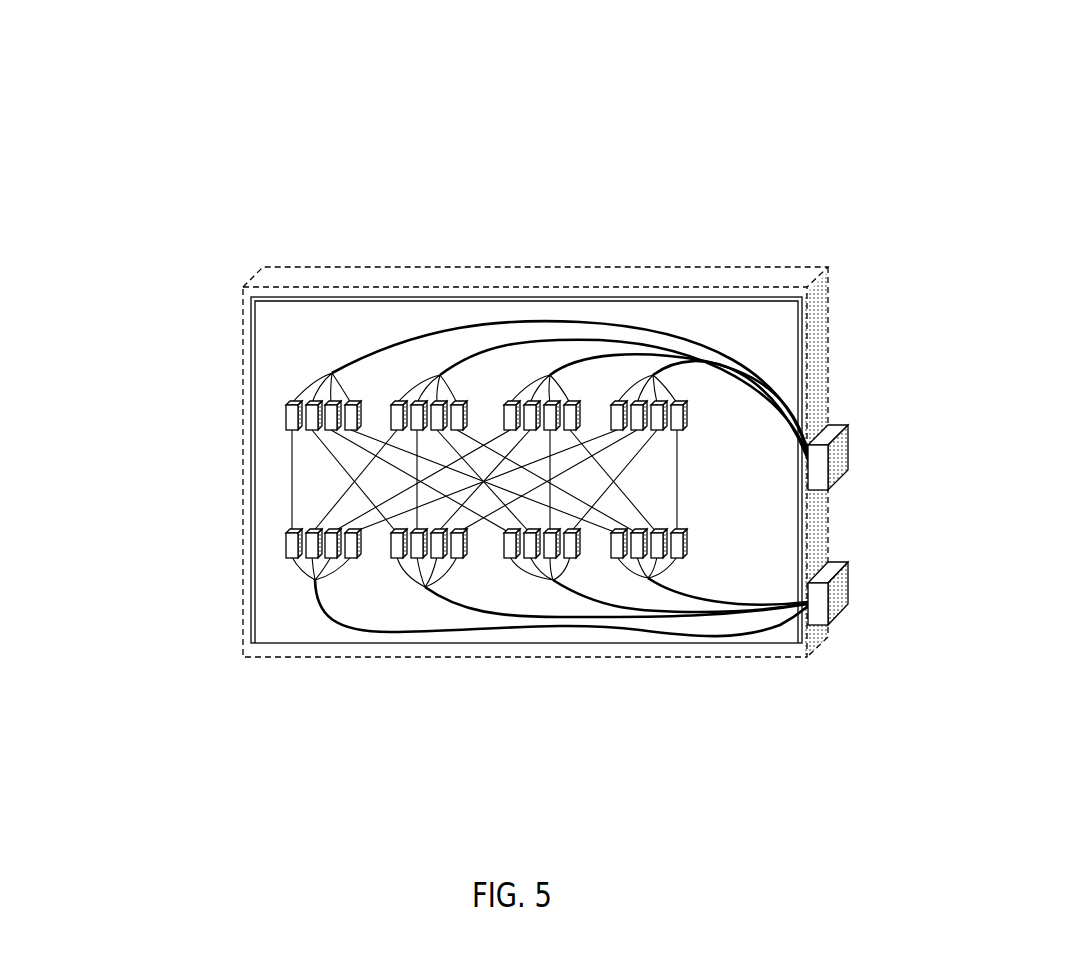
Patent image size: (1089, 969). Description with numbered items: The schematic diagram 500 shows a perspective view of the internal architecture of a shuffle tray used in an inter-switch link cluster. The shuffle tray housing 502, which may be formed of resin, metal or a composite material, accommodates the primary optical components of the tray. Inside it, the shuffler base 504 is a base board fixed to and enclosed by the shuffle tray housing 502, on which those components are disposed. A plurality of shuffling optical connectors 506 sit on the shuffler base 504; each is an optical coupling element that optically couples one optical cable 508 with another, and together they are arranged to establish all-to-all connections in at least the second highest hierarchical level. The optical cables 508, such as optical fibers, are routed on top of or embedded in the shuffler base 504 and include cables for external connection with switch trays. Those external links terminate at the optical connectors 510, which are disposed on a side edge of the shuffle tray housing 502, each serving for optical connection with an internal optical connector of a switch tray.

The schematic diagram 500 is at (975, 72).
The shuffle tray housing 502 is at (300, 278).
The shuffler base 504 is at (278, 623).
The shuffling optical connector 506 is at (293, 413).
The optical cable 508 is at (565, 320).
The optical connector 510 is at (842, 453).